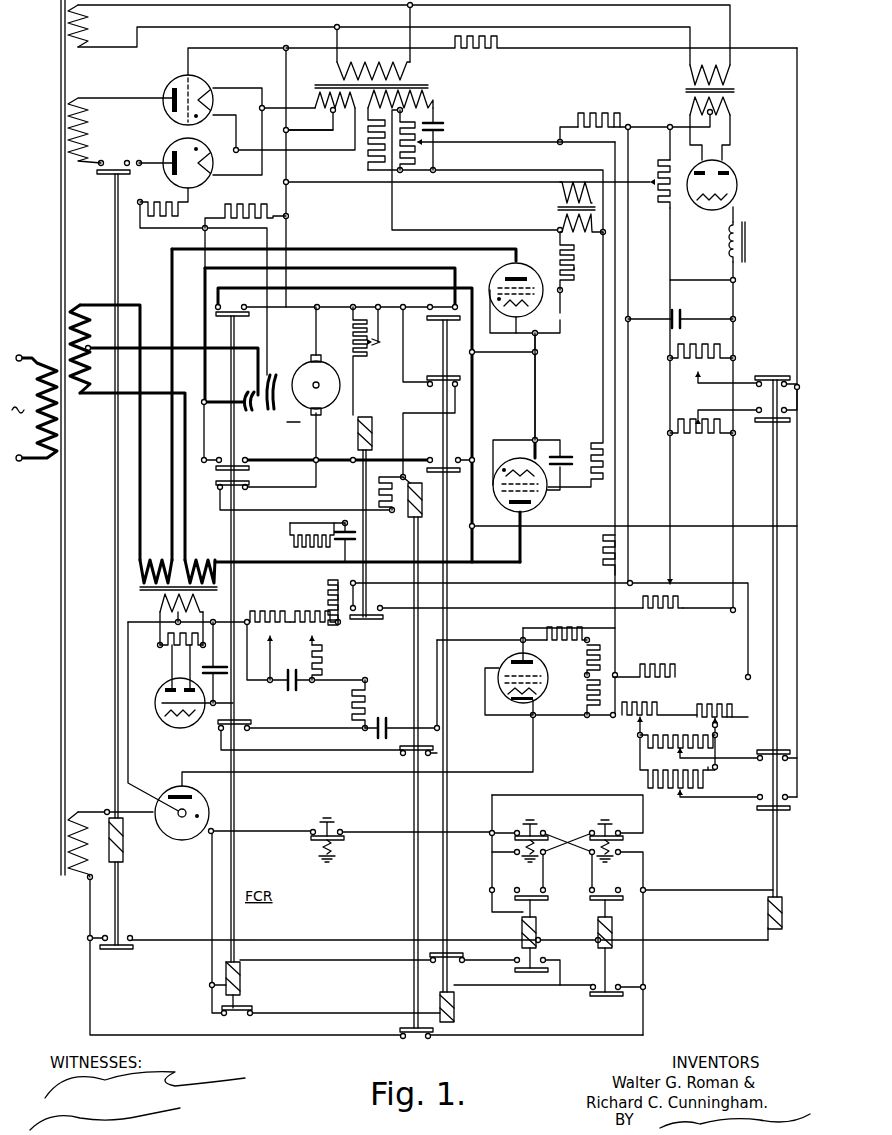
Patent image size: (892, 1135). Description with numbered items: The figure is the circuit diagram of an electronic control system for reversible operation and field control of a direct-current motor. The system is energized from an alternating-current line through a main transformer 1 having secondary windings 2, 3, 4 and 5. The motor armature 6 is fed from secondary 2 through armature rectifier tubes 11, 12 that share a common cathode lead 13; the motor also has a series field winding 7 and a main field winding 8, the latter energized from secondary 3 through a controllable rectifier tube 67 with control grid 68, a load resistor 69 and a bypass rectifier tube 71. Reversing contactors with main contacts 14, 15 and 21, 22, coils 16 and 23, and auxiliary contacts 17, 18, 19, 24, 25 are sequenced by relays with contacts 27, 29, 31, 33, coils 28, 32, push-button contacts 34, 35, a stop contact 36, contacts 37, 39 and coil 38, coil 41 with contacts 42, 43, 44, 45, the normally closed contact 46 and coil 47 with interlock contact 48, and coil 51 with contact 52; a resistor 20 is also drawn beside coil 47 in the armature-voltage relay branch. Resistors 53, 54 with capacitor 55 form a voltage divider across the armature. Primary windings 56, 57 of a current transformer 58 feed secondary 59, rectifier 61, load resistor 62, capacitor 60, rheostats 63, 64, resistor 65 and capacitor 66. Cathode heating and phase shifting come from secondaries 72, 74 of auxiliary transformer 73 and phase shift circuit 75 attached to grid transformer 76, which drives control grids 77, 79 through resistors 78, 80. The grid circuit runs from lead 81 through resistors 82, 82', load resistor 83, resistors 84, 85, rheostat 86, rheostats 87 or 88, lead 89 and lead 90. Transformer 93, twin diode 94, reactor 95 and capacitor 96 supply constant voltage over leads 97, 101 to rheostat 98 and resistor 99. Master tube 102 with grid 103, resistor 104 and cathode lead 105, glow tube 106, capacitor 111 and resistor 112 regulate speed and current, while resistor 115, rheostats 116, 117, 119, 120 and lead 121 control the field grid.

The main transformer 1 is at (61, 500).
The secondary winding 2 is at (88, 326).
The secondary winding 3 is at (88, 130).
The secondary winding 4 is at (86, 26).
The secondary winding 5 is at (86, 836).
The armature 6 is at (323, 364).
The series field winding 7 is at (252, 405).
The main field winding 8 is at (270, 403).
The armature rectifier tube 11 is at (500, 276).
The armature rectifier tube 12 is at (540, 506).
The common cathode lead 13 is at (535, 398).
The main contact 14 is at (236, 318).
The main contact 15 is at (250, 468).
The coil 16 is at (242, 980).
The auxiliary contact 17 is at (250, 490).
The auxiliary contact 18 is at (246, 720).
The auxiliary contact 19 is at (236, 1015).
The resistor 20 is at (378, 485).
The main contact 21 is at (433, 320).
The main contact 22 is at (448, 473).
The coil 23 is at (455, 1010).
The auxiliary contact 24 is at (440, 376).
The auxiliary contact 25 is at (460, 956).
The contact 27 is at (546, 972).
The coil 28 is at (520, 920).
The interlock contact 29 is at (548, 898).
The contact 31 is at (604, 998).
The coil 32 is at (597, 928).
The interlock contact 33 is at (597, 900).
The forward push-button contact 34 is at (536, 832).
The reverse push-button contact 35 is at (622, 836).
The stop contact 36 is at (344, 842).
The normally open contact 37 is at (132, 950).
The coil 38 is at (124, 846).
The normally open contact 39 is at (108, 176).
The coil 41 is at (766, 914).
The contact 42 is at (763, 806).
The contact 43 is at (763, 748).
The contact 44 is at (780, 426).
The contact 45 is at (768, 376).
The normally closed contact 46 is at (416, 1034).
The control coil 47 is at (422, 505).
The interlock contact 48 is at (406, 752).
The coil 51 is at (375, 428).
The contact 52 is at (372, 619).
The resistor 53 is at (282, 533).
The resistor 54 is at (318, 568).
The filtering capacitor 55 is at (358, 538).
The primary winding 56 is at (178, 565).
The primary winding 57 is at (204, 558).
The current transformer 58 is at (150, 594).
The secondary winding 59 is at (197, 604).
The capacitor 60 is at (217, 662).
The twin rectifier 61 is at (178, 727).
The load resistor 62 is at (160, 648).
The rheostat 63 is at (266, 622).
The rheostat 64 is at (310, 622).
The resistor 65 is at (310, 655).
The capacitor 66 is at (287, 686).
The controllable rectifier tube 67 is at (166, 114).
The control grid 68 is at (192, 80).
The load resistor 69 is at (262, 204).
The rectifier tube 71 is at (164, 148).
The mid-tapped secondary 72 is at (330, 112).
The auxiliary transformer 73 is at (428, 86).
The mid-tapped secondary 74 is at (433, 102).
The phase shift circuit 75 is at (436, 150).
The grid transformer 76 is at (556, 208).
The control grid 77 is at (558, 256).
The resistor 78 is at (572, 262).
The control grid 79 is at (542, 490).
The resistor 80 is at (572, 470).
The lead 81 is at (492, 142).
The resistor 82 is at (596, 555).
The resistor 82' is at (599, 111).
The load resistor 83 is at (560, 648).
The resistor 84 is at (600, 651).
The resistor 85 is at (582, 700).
The potentiometer rheostat 86 is at (636, 710).
The speed control rheostat 87 is at (645, 748).
The control rheostat 88 is at (668, 788).
The lead 89 is at (800, 530).
The lead 90 is at (472, 538).
The transformer 93 is at (688, 92).
The twin diode 94 is at (737, 185).
The filtering reactor 95 is at (747, 246).
The filter capacitor 96 is at (680, 312).
The lead 97 is at (735, 330).
The rheostat 98 is at (704, 712).
The resistor 99 is at (676, 668).
The lead 101 is at (669, 127).
The master control tube 102 is at (500, 666).
The control grid 103 is at (539, 683).
The resistor 104 is at (326, 592).
The cathode lead 105 is at (537, 720).
The glow-discharge tube 106 is at (168, 796).
The capacitor 111 is at (380, 720).
The resistor 112 is at (366, 696).
The resistor 115 is at (487, 52).
The rheostat 116 is at (694, 440).
The rheostat 117 is at (694, 374).
The rheostat 119 is at (664, 610).
The rheostat 120 is at (654, 196).
The lead 121 is at (440, 190).